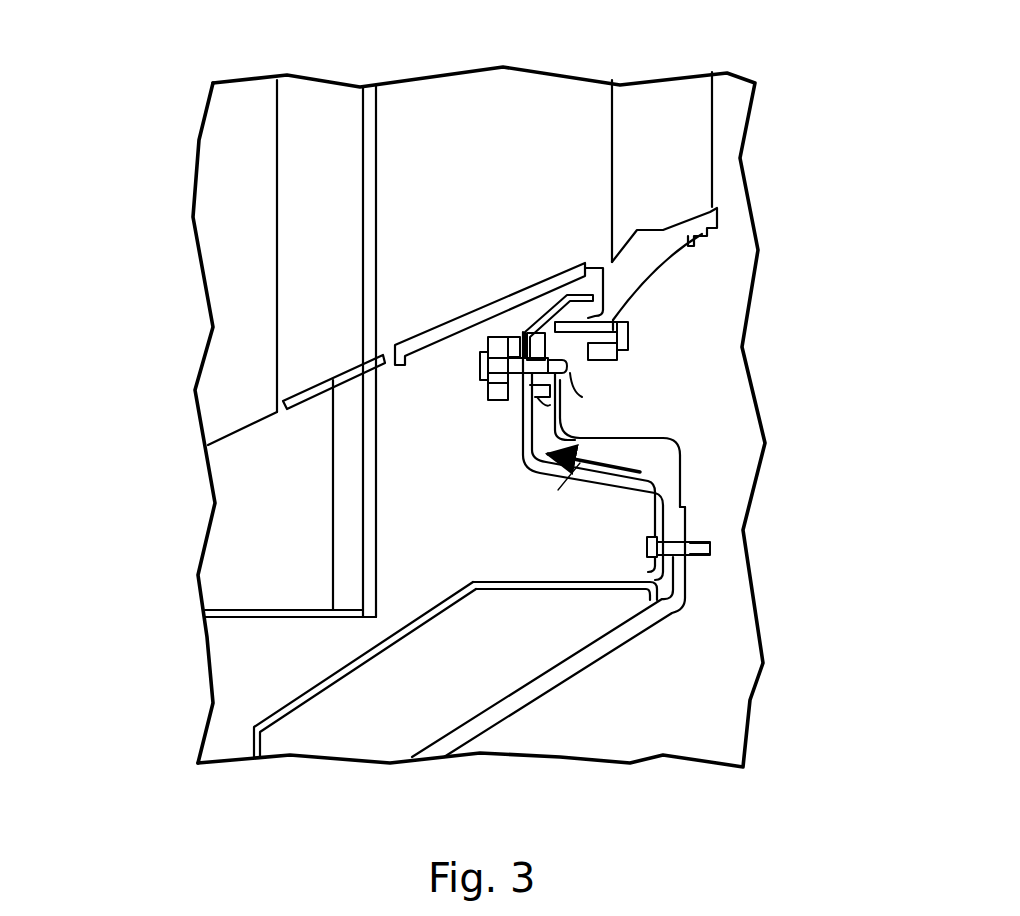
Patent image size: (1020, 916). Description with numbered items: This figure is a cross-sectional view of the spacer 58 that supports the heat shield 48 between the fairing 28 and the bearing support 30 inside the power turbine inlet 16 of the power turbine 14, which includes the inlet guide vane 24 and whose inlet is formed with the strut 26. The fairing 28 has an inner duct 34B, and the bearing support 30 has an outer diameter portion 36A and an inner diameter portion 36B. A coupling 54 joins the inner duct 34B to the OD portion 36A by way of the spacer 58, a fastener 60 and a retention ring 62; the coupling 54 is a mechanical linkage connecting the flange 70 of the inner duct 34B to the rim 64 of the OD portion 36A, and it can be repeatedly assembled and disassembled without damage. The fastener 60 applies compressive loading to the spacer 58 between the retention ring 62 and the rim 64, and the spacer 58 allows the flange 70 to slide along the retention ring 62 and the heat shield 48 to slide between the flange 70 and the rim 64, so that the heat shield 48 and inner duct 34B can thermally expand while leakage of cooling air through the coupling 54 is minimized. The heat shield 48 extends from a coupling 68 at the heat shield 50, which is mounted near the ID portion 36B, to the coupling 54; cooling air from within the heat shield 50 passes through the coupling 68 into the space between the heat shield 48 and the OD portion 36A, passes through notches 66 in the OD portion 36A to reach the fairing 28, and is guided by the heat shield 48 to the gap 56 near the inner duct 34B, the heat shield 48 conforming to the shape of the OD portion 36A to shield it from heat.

The power turbine 14 is at (777, 105).
The power turbine inlet 16 is at (179, 117).
The inlet guide vane 24 is at (648, 150).
The strut 26 is at (324, 276).
The fairing 28 is at (413, 333).
The bearing support 30 is at (692, 481).
The inner duct 34B is at (480, 306).
The outer diameter portion 36A is at (670, 450).
The inner diameter portion 36B is at (640, 663).
The heat shield 48 is at (687, 508).
The heat shield 50 is at (323, 692).
The coupling 54 is at (460, 395).
The gap 56 is at (603, 270).
The spacer 58 is at (484, 343).
The fastener 60 is at (478, 368).
The retention ring 62 is at (497, 402).
The rim 64 is at (630, 345).
The notches 66 is at (548, 400).
The coupling 68 is at (712, 550).
The flange 70 is at (515, 310).